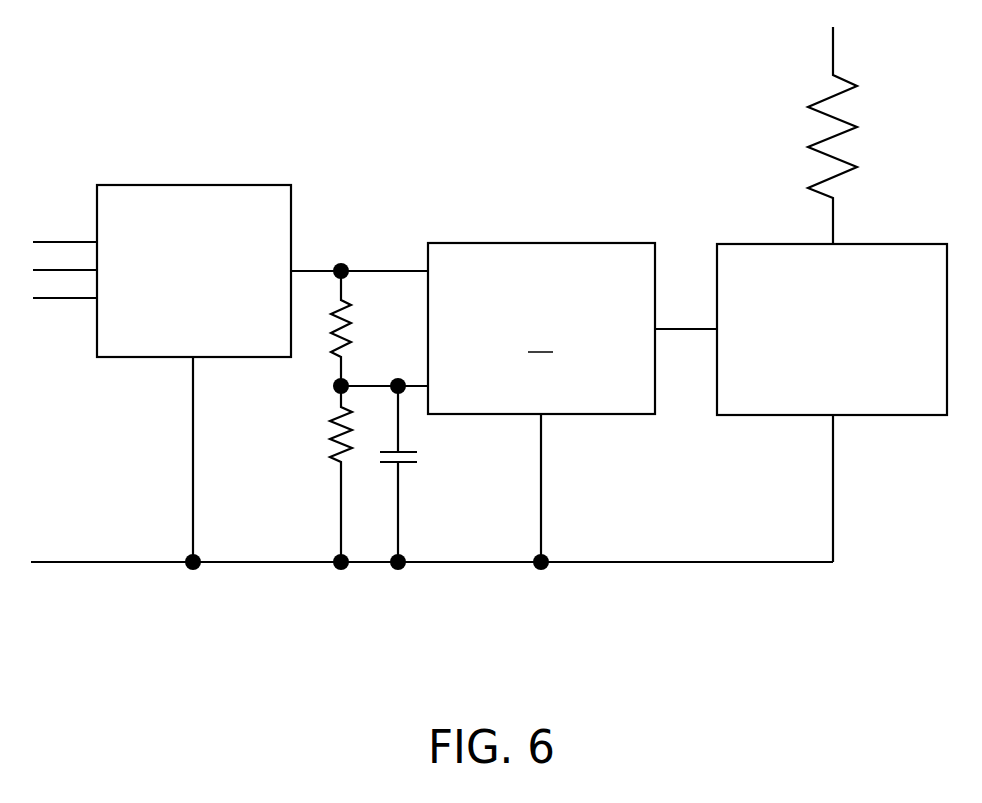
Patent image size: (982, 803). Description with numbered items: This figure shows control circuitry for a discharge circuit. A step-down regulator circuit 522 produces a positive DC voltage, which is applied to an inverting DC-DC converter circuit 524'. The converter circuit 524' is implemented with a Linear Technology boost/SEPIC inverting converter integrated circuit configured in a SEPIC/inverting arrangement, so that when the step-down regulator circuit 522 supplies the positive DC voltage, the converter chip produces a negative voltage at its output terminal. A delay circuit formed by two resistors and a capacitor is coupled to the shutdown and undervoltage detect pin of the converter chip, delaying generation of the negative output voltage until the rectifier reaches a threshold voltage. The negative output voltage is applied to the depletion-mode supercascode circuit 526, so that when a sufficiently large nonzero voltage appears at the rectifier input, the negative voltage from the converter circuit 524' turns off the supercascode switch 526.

The step-down regulator circuit 522 is at (177, 304).
The inverting DC-DC converter circuit 524' is at (489, 298).
The depletion-mode supercascode circuit 526 is at (815, 364).